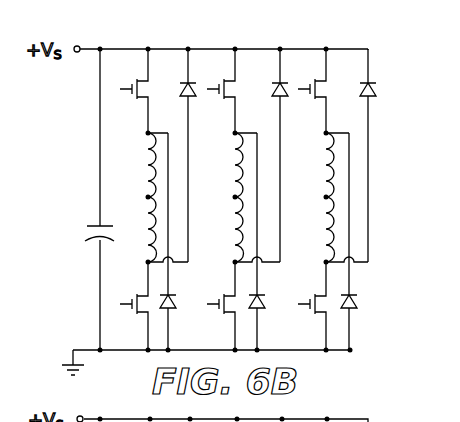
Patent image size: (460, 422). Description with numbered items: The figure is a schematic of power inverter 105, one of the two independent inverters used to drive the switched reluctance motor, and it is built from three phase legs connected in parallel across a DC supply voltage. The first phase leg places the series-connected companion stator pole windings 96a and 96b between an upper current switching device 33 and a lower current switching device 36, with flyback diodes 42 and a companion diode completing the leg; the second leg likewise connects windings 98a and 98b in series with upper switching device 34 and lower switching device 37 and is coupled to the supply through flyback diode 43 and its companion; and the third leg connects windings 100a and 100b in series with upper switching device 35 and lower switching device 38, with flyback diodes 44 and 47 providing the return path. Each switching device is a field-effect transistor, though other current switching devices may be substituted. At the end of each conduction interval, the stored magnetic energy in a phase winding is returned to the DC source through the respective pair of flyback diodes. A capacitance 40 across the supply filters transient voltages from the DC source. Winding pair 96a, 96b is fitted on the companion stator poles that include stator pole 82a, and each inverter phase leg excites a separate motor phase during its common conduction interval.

The upper current switching device 33 is at (140, 108).
The upper current switching device 34 is at (230, 108).
The upper current switching device 35 is at (321, 108).
The lower current switching device 36 is at (140, 314).
The lower current switching device 37 is at (228, 314).
The lower current switching device 38 is at (319, 314).
The capacitance 40 is at (95, 226).
The flyback diode 42 is at (181, 94).
The flyback diode 43 is at (273, 94).
The flyback diode 44 is at (377, 90).
The flyback diode 47 is at (359, 303).
The stator pole winding 96a is at (147, 168).
The stator pole winding 96b is at (148, 236).
The stator pole winding 98a is at (234, 174).
The stator pole winding 98b is at (217, 234).
The stator pole winding 100a is at (334, 180).
The stator pole winding 100b is at (334, 238).
The power inverter 105 is at (388, 142).
The stator pole 82a is at (432, 356).